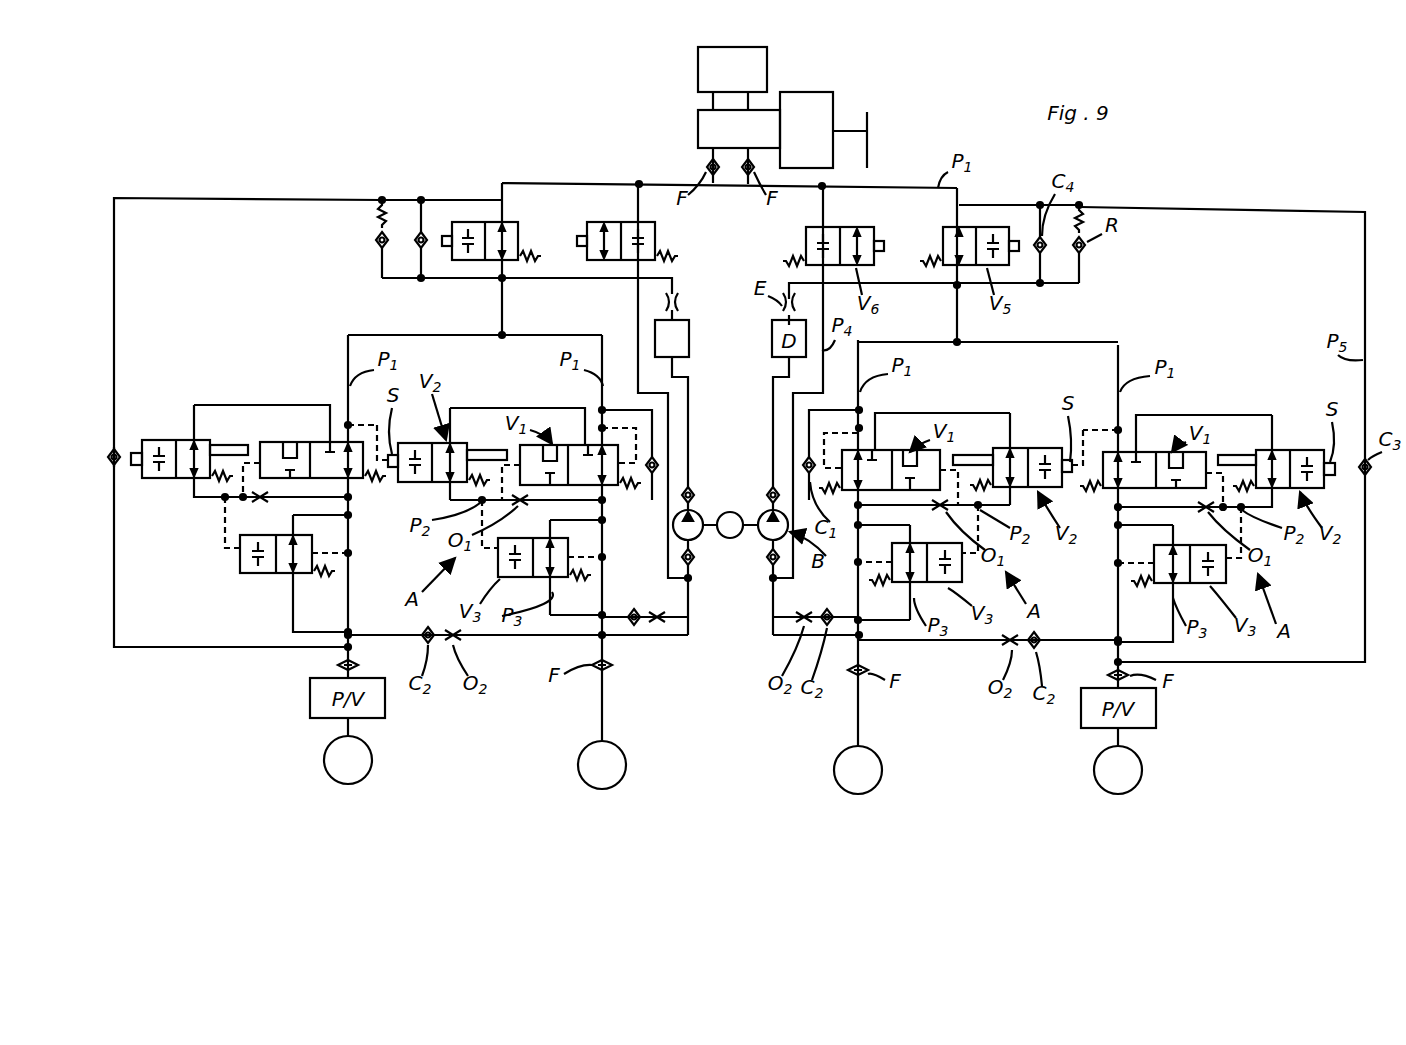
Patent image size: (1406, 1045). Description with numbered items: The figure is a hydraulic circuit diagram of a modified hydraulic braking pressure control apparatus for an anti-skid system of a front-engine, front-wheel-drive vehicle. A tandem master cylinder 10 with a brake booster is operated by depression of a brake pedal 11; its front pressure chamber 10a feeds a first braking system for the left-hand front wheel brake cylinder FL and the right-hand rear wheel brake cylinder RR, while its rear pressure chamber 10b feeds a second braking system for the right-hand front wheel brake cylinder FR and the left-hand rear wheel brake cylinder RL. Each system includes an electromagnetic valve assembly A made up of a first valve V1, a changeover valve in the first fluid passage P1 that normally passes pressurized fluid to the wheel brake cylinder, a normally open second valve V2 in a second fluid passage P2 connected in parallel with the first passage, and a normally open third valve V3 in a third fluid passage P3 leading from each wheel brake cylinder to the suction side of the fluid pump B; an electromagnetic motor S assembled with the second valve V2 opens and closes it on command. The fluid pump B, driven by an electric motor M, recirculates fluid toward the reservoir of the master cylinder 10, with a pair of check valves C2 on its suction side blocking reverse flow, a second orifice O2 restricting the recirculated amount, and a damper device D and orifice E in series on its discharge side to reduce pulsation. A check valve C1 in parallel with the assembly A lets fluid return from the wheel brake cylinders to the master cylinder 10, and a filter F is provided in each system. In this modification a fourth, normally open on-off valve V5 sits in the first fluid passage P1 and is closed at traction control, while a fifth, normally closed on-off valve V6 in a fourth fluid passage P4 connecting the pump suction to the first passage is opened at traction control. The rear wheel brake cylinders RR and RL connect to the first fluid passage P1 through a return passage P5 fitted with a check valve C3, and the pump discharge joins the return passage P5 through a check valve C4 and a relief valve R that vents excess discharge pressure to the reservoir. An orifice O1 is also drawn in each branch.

The tandem master cylinder 10 is at (696, 128).
The front pressure chamber 10a is at (708, 162).
The rear pressure chamber 10b is at (746, 170).
The brake pedal 11 is at (870, 162).
The first fluid passage P1 is at (545, 183).
The second fluid passage P2 is at (232, 500).
The third fluid passage P3 is at (296, 588).
The fourth fluid passage P4 is at (640, 350).
The return passage P5 is at (118, 348).
The check valve C1 is at (650, 482).
The check valve C2 is at (634, 628).
The check valve C3 is at (112, 450).
The check valve C4 is at (419, 232).
The relief valve R is at (375, 236).
The first valve V1 is at (292, 440).
The second valve V2 is at (192, 436).
The third valve V3 is at (257, 576).
The fourth electrically operated on-off valve V5 is at (476, 262).
The fifth electrically operated on-off valve V6 is at (610, 262).
The electromagnetic motor S is at (133, 452).
The orifice E is at (679, 306).
The damper device D is at (672, 477).
The fluid pump B is at (680, 530).
The electric motor M is at (730, 525).
The filter F is at (338, 665).
The electromagnetic valve assembly A is at (200, 558).
The orifice O1 is at (258, 503).
The second orifice O2 is at (660, 626).
The right-hand rear wheel brake cylinder RR is at (348, 760).
The left-hand front wheel brake cylinder FL is at (602, 766).
The right-hand front wheel brake cylinder FR is at (857, 771).
The left-hand rear wheel brake cylinder RL is at (1117, 771).